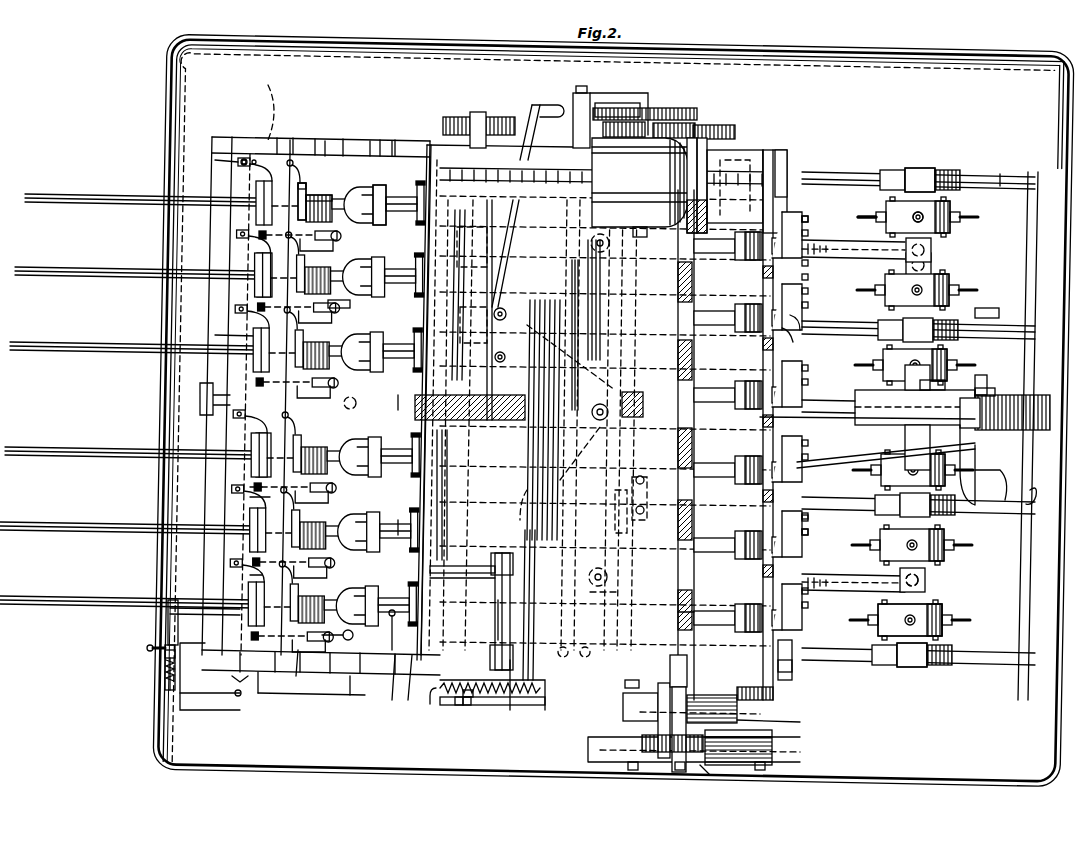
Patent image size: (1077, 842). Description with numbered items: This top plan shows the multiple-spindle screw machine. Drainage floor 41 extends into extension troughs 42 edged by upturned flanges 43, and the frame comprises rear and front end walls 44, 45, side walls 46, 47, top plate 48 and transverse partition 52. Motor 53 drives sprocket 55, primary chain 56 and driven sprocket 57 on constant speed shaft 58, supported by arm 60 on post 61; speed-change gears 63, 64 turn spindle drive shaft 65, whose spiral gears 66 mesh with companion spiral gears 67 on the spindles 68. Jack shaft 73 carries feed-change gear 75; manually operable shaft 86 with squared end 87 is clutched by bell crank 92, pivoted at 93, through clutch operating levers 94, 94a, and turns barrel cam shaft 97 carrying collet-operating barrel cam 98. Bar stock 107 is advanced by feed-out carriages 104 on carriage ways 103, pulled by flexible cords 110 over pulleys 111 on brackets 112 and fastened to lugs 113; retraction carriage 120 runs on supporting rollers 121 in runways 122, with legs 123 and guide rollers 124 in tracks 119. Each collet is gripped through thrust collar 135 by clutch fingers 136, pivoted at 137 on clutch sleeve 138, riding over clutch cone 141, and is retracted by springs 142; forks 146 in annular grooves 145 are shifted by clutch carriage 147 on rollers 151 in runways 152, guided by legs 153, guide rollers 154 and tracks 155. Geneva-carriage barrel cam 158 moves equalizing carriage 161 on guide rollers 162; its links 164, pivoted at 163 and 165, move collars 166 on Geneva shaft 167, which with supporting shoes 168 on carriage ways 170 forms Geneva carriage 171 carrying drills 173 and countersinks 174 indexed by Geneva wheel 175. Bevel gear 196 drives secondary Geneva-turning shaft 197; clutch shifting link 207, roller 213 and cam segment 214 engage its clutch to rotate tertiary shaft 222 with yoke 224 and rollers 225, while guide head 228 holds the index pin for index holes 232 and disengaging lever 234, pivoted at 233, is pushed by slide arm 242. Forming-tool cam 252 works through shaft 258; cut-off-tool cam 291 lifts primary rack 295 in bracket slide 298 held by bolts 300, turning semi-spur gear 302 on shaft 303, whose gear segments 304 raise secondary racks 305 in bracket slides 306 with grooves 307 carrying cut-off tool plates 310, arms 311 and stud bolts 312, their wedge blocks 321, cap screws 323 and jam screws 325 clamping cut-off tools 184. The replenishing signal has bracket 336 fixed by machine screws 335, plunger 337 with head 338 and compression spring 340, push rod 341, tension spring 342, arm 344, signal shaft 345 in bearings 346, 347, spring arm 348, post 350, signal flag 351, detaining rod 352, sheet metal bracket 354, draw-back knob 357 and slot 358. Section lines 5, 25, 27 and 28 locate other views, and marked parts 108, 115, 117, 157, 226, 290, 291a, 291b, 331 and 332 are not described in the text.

The section line 5- 5 is at (155, 400).
The section line 25- 25 is at (835, 368).
The section line 27- 27 is at (600, 758).
The section line 28- 28 is at (775, 714).
The rack bar 41 is at (1030, 168).
The casing wall 42 is at (205, 80).
The casing 43 is at (262, 40).
The left frame plate 44 is at (215, 225).
The right frame post 45 is at (1040, 180).
The frame cross member 46 is at (326, 140).
The bottom frame bar 47 is at (325, 676).
The bearing block 48 is at (770, 165).
The bearing plate 52 is at (788, 160).
The drum 53 is at (600, 184).
The gear 55 is at (665, 108).
The gear 56 is at (685, 123).
The plate 57 is at (705, 136).
The worm gear 58 is at (648, 108).
The bracket 60 is at (625, 95).
The post 61 is at (584, 87).
The plate 63 is at (712, 136).
The gear 64 is at (728, 136).
The housing 65 is at (742, 152).
The cross shaft 66 is at (710, 356).
The rack 67 is at (678, 612).
The lever 68 is at (398, 522).
The knob 73 is at (478, 112).
The gear 75 is at (455, 117).
The stop 86 is at (458, 705).
The stop 87 is at (468, 705).
The pivot 92 is at (507, 316).
The pivot 93 is at (503, 352).
The handle 94 is at (530, 108).
The handle rod 94a is at (516, 712).
The bracket 97 is at (203, 395).
The lever 98 is at (398, 400).
The shaft 103 is at (215, 335).
The collar 104 is at (255, 262).
The shaft 107 is at (60, 206).
The lever 108 is at (341, 236).
The rod 110 is at (297, 650).
The lever 111 is at (340, 308).
The pin 112 is at (340, 318).
The collar 113 is at (250, 487).
The collar 115 is at (250, 575).
The collar 117 is at (250, 590).
The bracket 119 is at (215, 160).
The bar 120 is at (270, 497).
The rod 121 is at (291, 148).
The link 122 is at (257, 105).
The pin 123 is at (253, 158).
The screw 124 is at (243, 172).
The collar 135 is at (303, 182).
The arm 136 is at (325, 446).
The gear 137 is at (319, 194).
The collar 138 is at (318, 196).
The collar 141 is at (361, 190).
The gear box 142 is at (950, 630).
The arm 145 is at (345, 522).
The arm 146 is at (360, 596).
The roller 147 is at (340, 641).
The rod 151 is at (371, 150).
The rod 152 is at (392, 150).
The rod 153 is at (394, 680).
The pivot 154 is at (392, 630).
The rod 155 is at (412, 680).
The pin 157 is at (350, 398).
The bars 158 is at (518, 505).
The link 161 is at (590, 592).
The pivot 162 is at (560, 648).
The pivot 163 is at (590, 242).
The shaft 164 is at (850, 246).
The coupling 165 is at (926, 581).
The coupling 166 is at (931, 250).
The coupling 167 is at (920, 168).
The coupling 168 is at (884, 172).
The shaft 170 is at (1012, 178).
The gear box 171 is at (912, 165).
The screw 173 is at (876, 214).
The bearing 174 is at (924, 217).
The block 175 is at (855, 405).
The stop 184 is at (810, 219).
The pawl 196 is at (652, 428).
The rod 197 is at (805, 420).
The lever 207 is at (830, 462).
The link 213 is at (615, 505).
The link 214 is at (658, 446).
The stop 222 is at (985, 310).
The bracket 224 is at (987, 376).
The plate 225 is at (987, 390).
The plate 226 is at (880, 396).
The block 228 is at (1000, 412).
The slide 232 is at (905, 428).
The arm 233 is at (980, 530).
The arm 234 is at (972, 482).
The spring 242 is at (1032, 500).
The gear 252 is at (740, 706).
The gear 258 is at (760, 694).
The shaft 290 is at (785, 728).
The bracket 291 is at (705, 773).
The gear 291a is at (785, 745).
The gear 291b is at (772, 755).
The bar 295 is at (648, 738).
The block 298 is at (640, 700).
The stop 300 is at (630, 684).
The gear 302 is at (690, 740).
The rack 303 is at (678, 331).
The rack 304 is at (678, 576).
The bracket 305 is at (800, 652).
The cross shaft 306 is at (720, 522).
The stop 307 is at (790, 668).
The bracket 310 is at (795, 348).
The stop 311 is at (808, 535).
The stop 312 is at (800, 332).
The stop 321 is at (808, 266).
The stop 323 is at (808, 280).
The stop 325 is at (808, 519).
The foot 331 is at (633, 771).
The foot 332 is at (680, 771).
The hook 335 is at (242, 684).
The bracket 336 is at (178, 706).
The plate 337 is at (168, 623).
The rod 338 is at (170, 611).
The rod 340 is at (165, 693).
The rod 341 is at (351, 690).
The stop 342 is at (468, 698).
The rod 344 is at (522, 706).
The rod 345 is at (484, 620).
The bar 346 is at (507, 672).
The slide 347 is at (512, 562).
The spring 348 is at (540, 705).
The hook 350 is at (436, 705).
The bar 351 is at (430, 570).
The knob 352 is at (147, 648).
The collar 354 is at (165, 655).
The rod 357 is at (167, 675).
The spring 358 is at (166, 665).